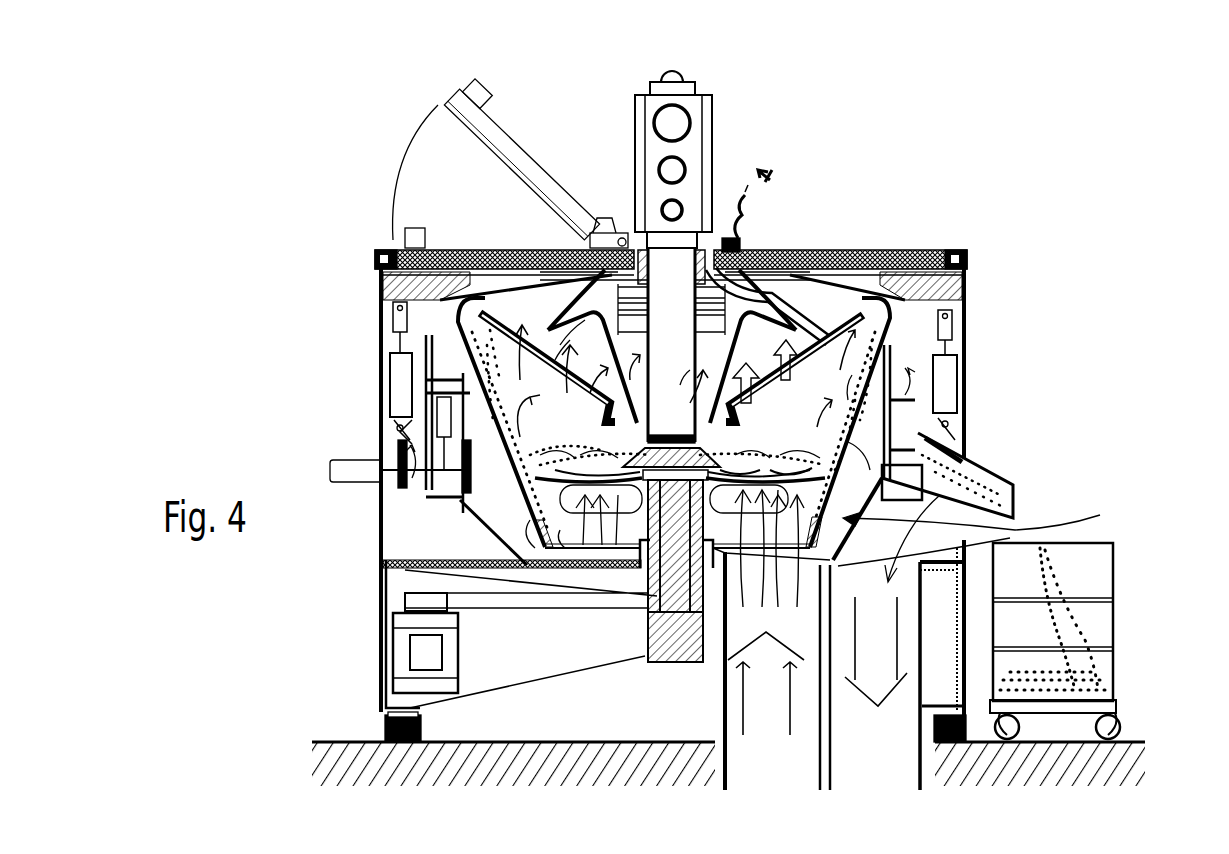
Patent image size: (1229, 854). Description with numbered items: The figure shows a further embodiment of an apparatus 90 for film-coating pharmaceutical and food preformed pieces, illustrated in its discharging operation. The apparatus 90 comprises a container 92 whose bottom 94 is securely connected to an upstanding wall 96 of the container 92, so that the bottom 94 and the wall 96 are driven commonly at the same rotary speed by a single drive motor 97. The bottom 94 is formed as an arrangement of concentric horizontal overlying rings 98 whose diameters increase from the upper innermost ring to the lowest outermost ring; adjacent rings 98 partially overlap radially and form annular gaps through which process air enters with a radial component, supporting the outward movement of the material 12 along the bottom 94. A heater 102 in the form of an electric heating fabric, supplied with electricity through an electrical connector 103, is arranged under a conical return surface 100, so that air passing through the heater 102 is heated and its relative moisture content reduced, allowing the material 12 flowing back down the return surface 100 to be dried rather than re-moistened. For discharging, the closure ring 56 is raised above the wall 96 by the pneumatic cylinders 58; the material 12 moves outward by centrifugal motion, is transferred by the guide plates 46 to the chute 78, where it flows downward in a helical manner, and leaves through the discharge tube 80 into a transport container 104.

The apparatus 90 is at (1013, 200).
The cable 103 is at (726, 236).
The return surface 100 is at (775, 300).
The guide plates 46 is at (810, 300).
The closure ring 56 is at (880, 252).
The material 12 is at (895, 370).
The pneumatic cylinders 58 is at (940, 388).
The heater 102 is at (965, 413).
The discharge tube 80 is at (1000, 500).
The container 92 is at (1090, 530).
The transport container 104 is at (1098, 572).
The chute 78 is at (390, 372).
The drive motor 97 is at (402, 653).
The bottom 94 is at (745, 462).
The rings 98 is at (790, 462).
The wall 96 is at (863, 471).